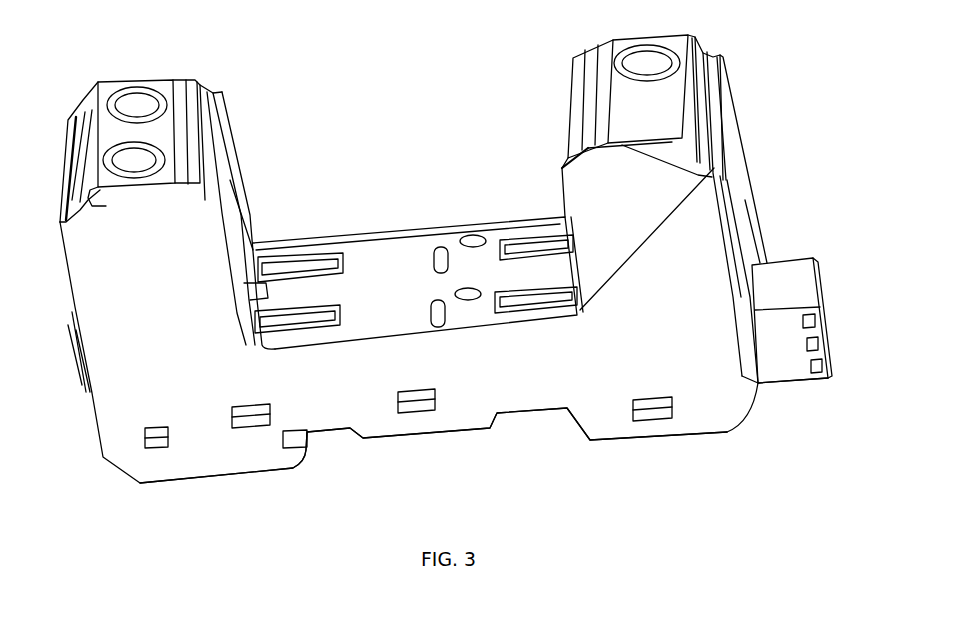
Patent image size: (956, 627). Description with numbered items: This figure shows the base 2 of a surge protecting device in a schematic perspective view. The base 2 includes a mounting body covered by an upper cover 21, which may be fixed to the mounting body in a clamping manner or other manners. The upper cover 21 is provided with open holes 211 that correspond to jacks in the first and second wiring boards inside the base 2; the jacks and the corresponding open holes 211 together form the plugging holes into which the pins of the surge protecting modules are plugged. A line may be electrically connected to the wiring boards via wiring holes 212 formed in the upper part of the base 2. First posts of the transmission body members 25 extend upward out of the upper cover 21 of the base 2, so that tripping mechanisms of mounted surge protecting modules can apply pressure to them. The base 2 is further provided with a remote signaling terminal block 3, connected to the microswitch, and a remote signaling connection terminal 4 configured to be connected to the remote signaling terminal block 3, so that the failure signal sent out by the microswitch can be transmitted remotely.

The base 2 is at (300, 152).
The upper cover 21 is at (510, 378).
The open holes 211 is at (301, 256).
The wiring holes 212 is at (127, 108).
The transmission body member 25 is at (438, 247).
The remote signaling terminal block 3 is at (777, 385).
The remote signaling connection terminal 4 is at (787, 283).